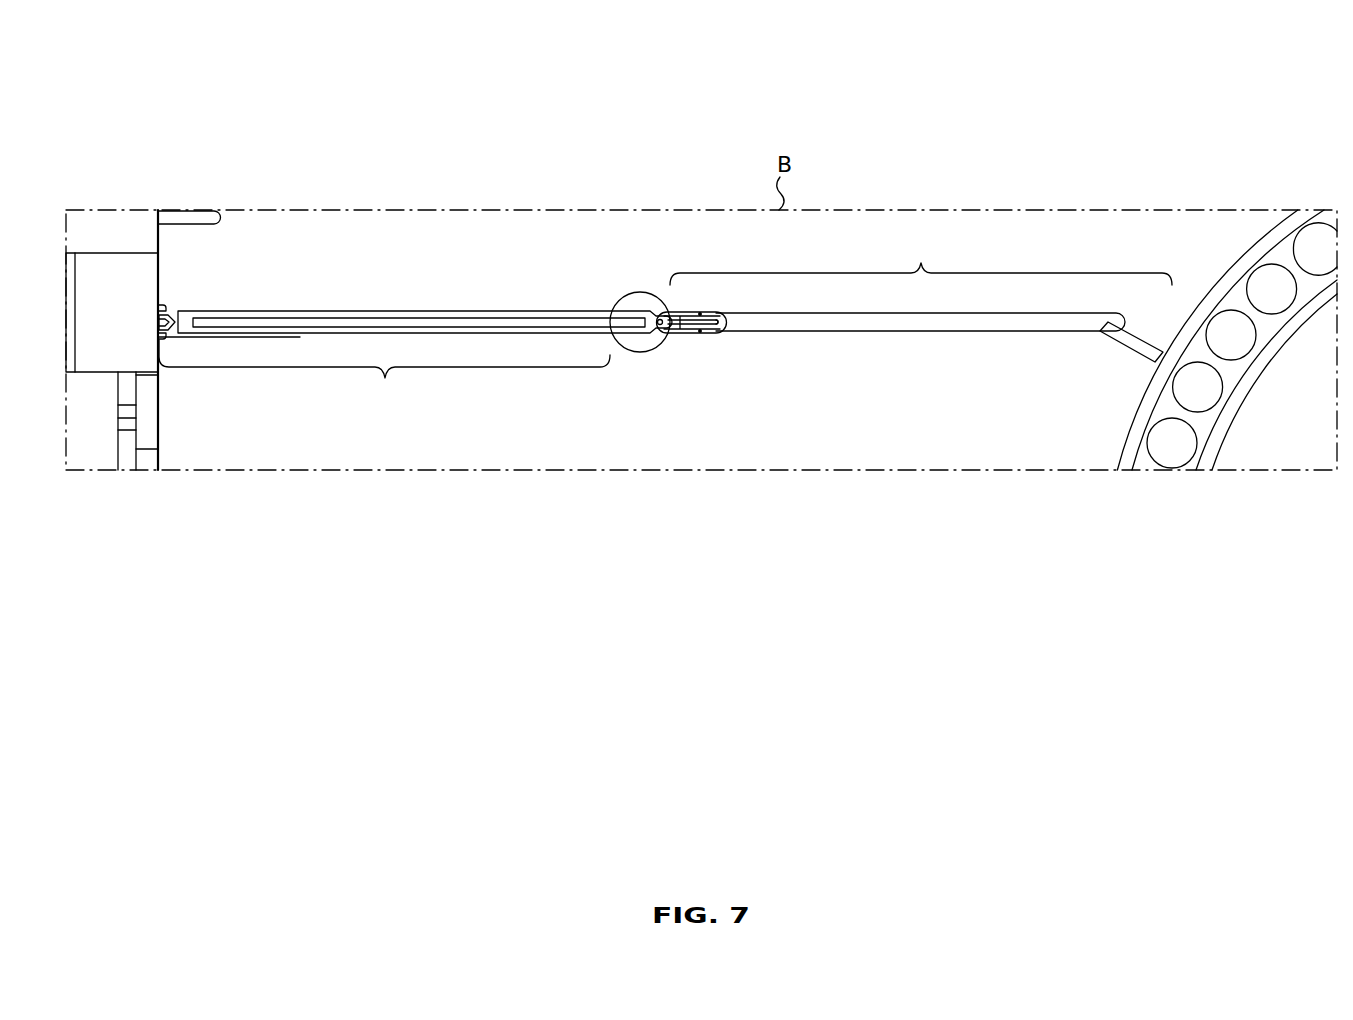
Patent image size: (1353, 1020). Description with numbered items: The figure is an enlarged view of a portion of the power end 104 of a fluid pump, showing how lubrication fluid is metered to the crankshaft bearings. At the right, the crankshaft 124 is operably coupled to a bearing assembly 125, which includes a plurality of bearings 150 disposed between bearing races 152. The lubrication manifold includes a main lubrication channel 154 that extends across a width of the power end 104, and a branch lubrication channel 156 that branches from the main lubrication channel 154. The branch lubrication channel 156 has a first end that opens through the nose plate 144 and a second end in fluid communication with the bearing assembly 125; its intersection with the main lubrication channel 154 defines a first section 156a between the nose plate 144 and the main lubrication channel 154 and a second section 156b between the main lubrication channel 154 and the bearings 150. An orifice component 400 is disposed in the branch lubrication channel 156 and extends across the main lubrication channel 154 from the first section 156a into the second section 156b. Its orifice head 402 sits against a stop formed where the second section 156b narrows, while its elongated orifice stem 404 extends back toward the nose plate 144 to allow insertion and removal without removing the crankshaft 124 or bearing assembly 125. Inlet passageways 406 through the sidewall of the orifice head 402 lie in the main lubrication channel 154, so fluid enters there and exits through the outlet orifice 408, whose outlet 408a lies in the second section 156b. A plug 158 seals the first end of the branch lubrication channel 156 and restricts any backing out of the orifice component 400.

The power end 104 is at (946, 99).
The crankshaft 124 is at (1265, 443).
The bearing assembly 125 is at (1104, 417).
The nose plate 144 is at (158, 272).
The bearings 150 is at (1290, 296).
The bearing races 152 is at (1143, 408).
The main lubrication channel 154 is at (632, 297).
The branch lubrication channel 156 is at (822, 326).
The first section of the branch lubrication channel 156a is at (384, 371).
The second section of the branch lubrication channel 156b is at (921, 262).
The plug 158 is at (172, 310).
The orifice component 400 is at (483, 334).
The orifice head 402 is at (708, 333).
The orifice stem 404 is at (380, 323).
The inlet passageways 406 is at (661, 325).
The outlet orifice 408 is at (678, 326).
The outlet of the outlet orifice 408a is at (716, 318).